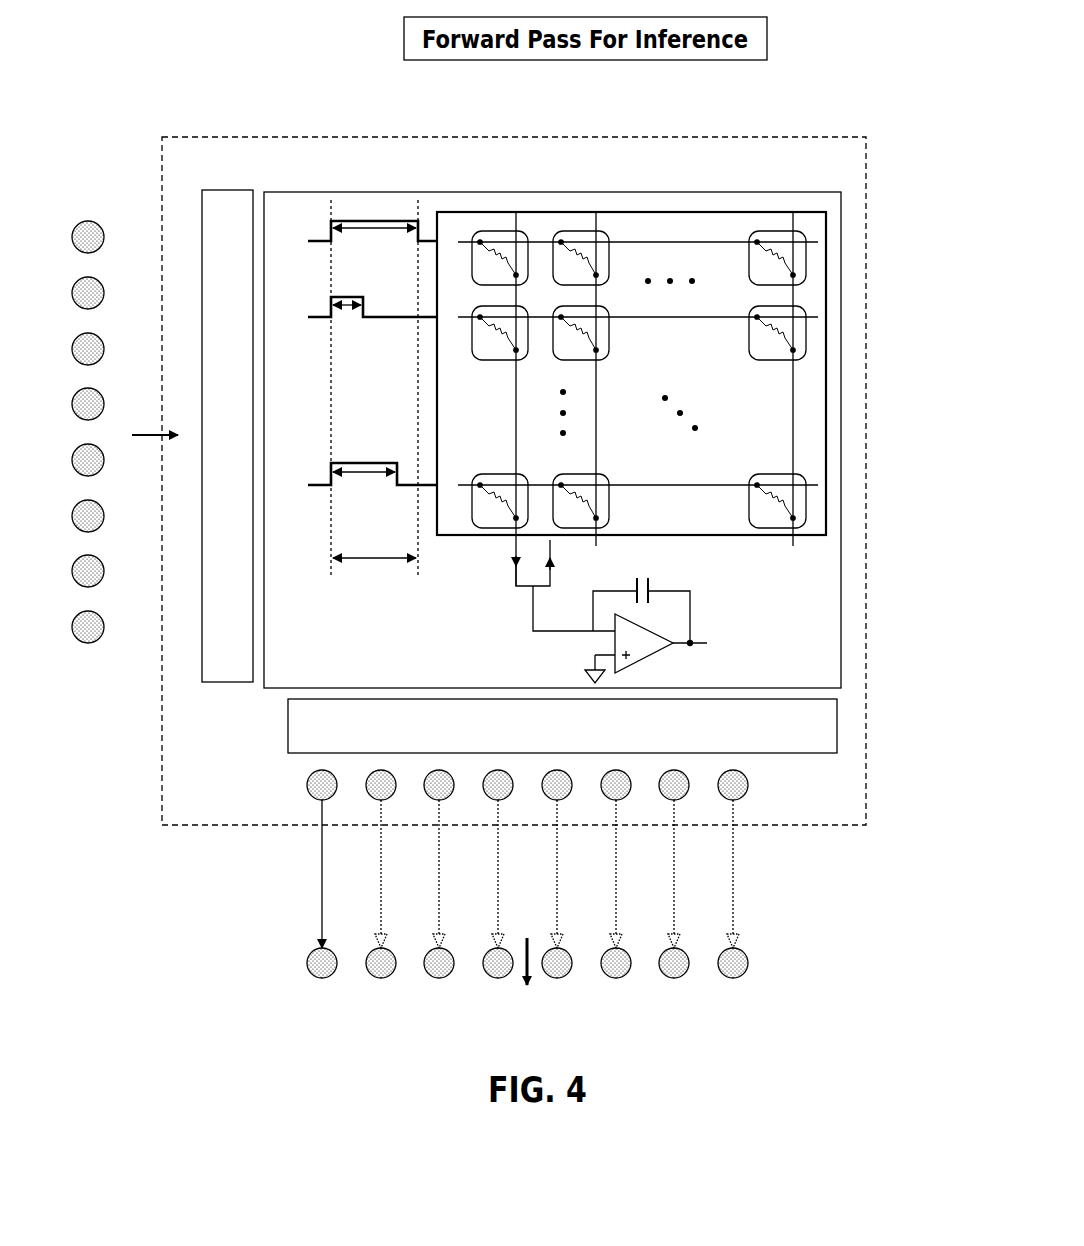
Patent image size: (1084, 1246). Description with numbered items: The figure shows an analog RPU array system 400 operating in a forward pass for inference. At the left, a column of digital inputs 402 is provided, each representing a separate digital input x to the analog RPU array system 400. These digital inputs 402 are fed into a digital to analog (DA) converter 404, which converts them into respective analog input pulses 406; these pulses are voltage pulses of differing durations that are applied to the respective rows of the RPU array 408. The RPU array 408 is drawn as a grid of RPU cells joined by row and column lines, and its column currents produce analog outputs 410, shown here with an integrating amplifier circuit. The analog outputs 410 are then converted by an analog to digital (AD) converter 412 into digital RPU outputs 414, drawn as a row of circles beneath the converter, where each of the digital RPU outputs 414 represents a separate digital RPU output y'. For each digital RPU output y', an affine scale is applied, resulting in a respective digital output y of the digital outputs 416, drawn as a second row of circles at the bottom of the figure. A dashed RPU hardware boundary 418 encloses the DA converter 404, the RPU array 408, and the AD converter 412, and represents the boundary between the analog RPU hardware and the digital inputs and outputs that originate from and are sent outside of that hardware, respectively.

The analog RPU array system 400 is at (172, 66).
The digital inputs 402 is at (96, 643).
The digital to analog (DA) converter 404 is at (240, 350).
The analog input pulses 406 is at (370, 217).
The RPU array 408 is at (713, 212).
The analog outputs 410 is at (690, 618).
The analog to digital (AD) converter 412 is at (653, 740).
The digital RPU outputs 414 is at (307, 785).
The digital outputs 416 is at (307, 963).
The RPU hardware boundary 418 is at (865, 512).